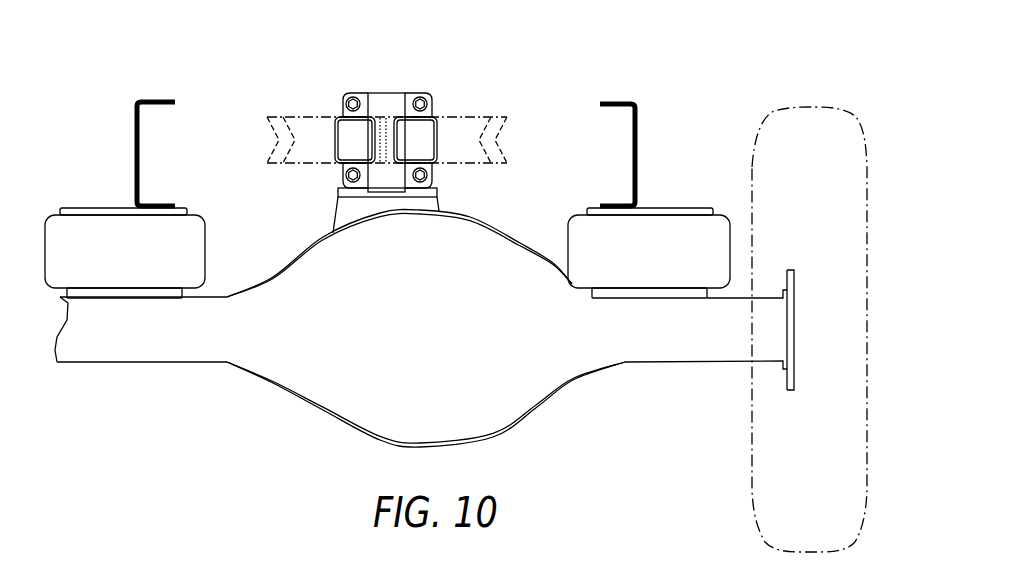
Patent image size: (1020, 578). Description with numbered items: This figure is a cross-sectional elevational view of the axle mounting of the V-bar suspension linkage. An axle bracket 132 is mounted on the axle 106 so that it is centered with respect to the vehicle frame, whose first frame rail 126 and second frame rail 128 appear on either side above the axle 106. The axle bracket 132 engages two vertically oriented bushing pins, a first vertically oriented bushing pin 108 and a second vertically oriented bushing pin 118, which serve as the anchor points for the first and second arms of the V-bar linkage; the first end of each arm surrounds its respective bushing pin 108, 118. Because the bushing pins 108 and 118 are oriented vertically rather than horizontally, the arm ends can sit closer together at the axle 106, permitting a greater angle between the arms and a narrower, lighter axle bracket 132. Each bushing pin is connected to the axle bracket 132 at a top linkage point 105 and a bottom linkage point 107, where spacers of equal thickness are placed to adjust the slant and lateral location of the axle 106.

The top linkage point 105 is at (350, 78).
The axle 106 is at (538, 365).
The bottom linkage point 107 is at (333, 180).
The first vertically oriented bushing pin 108 is at (418, 133).
The second vertically oriented bushing pin 118 is at (343, 135).
The first frame rail 126 is at (605, 100).
The second frame rail 128 is at (158, 100).
The axle bracket 132 is at (386, 100).